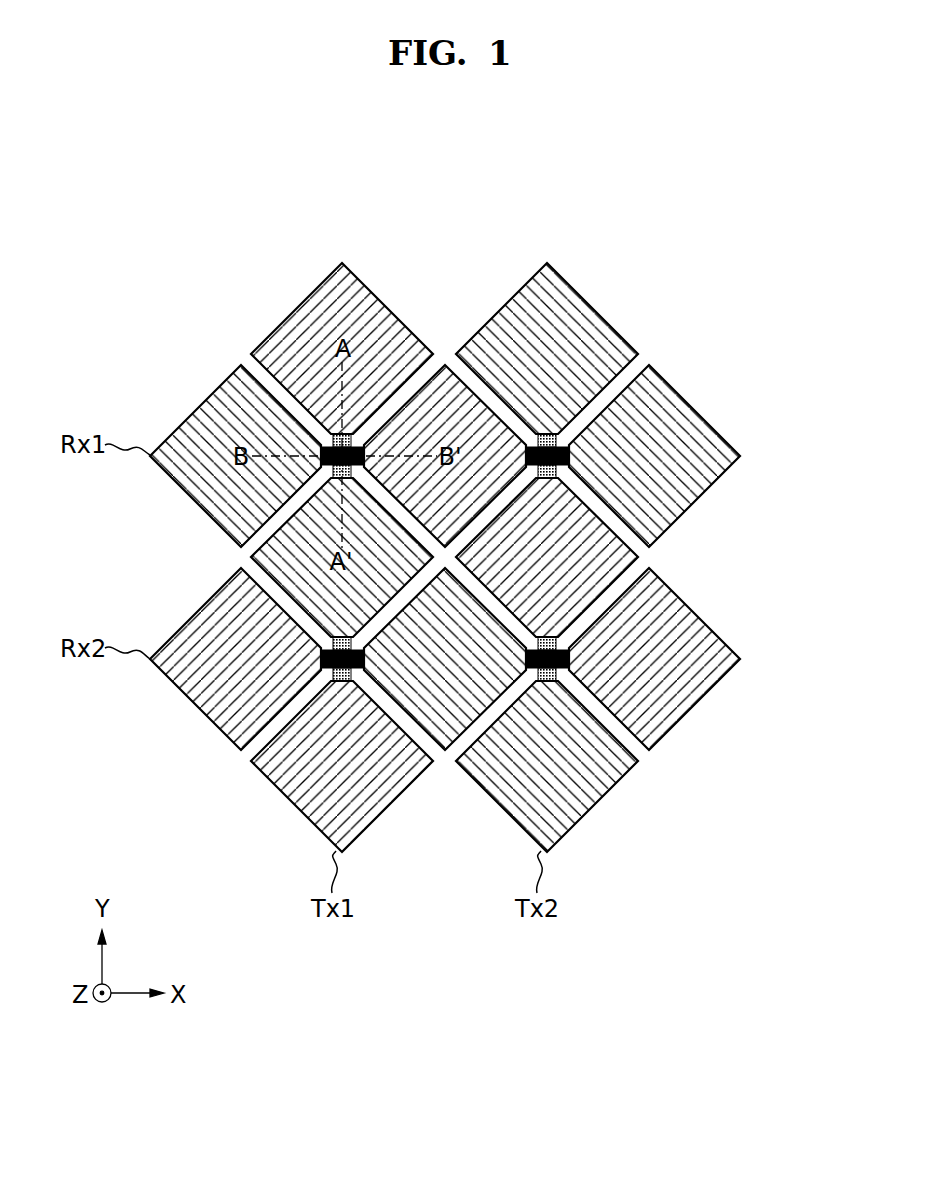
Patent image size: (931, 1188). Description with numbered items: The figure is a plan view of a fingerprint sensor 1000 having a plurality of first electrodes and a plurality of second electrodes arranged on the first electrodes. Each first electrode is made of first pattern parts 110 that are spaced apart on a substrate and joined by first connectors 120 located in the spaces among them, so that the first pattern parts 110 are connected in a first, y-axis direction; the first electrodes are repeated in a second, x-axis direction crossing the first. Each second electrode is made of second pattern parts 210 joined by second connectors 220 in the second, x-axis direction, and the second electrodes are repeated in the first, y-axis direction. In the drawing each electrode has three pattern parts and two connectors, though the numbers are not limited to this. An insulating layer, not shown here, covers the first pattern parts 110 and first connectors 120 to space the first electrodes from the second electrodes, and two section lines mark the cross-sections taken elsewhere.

The fingerprint sensor 1000 is at (484, 516).
The first pattern part 110 is at (592, 320).
The first connector 120 is at (557, 437).
The second pattern part 210 is at (682, 622).
The second connector 220 is at (568, 457).